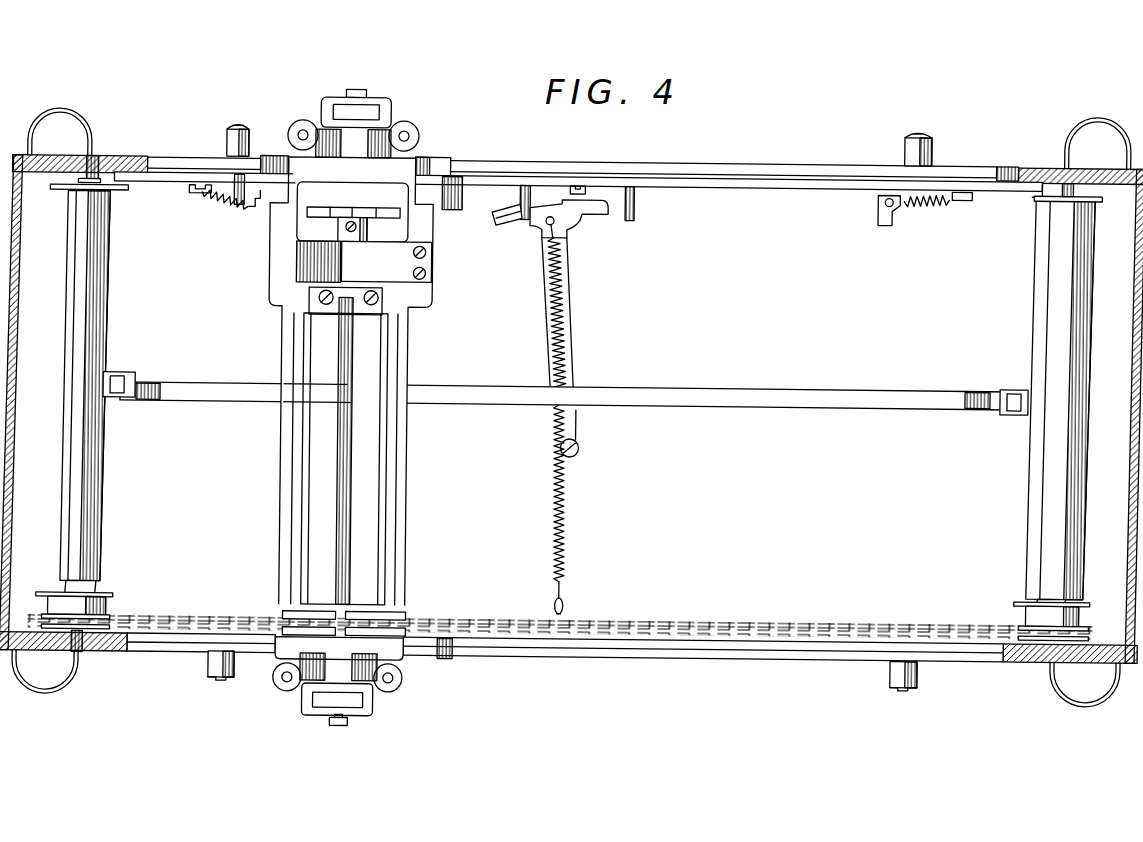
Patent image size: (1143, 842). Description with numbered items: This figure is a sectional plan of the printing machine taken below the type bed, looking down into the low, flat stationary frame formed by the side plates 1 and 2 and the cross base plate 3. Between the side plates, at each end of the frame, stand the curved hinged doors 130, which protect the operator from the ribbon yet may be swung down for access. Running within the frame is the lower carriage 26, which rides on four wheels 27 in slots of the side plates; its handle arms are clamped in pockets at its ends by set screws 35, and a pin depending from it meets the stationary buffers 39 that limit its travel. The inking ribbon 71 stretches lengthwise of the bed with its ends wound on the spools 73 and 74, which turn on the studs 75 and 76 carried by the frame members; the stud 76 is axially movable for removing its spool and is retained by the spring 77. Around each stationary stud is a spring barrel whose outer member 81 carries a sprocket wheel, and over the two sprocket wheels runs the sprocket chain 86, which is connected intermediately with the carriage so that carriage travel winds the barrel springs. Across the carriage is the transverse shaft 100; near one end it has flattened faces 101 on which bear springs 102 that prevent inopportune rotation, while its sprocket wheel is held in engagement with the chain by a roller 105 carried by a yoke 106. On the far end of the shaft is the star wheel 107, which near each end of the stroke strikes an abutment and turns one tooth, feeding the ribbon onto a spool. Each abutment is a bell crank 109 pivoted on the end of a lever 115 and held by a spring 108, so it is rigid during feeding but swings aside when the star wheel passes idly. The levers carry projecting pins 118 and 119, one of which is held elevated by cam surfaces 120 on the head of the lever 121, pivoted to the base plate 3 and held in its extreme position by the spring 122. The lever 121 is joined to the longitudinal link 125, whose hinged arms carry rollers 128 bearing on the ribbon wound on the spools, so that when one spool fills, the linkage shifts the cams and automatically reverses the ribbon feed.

The side plate 1 is at (32, 628).
The side plate 2 is at (40, 182).
The cross base plate 3 is at (769, 492).
The lower carriage 26 is at (400, 502).
The wheels 27 is at (446, 166).
The set screws 35 is at (360, 96).
The stationary buffers 39 is at (224, 150).
The inking ribbon 71 is at (1038, 312).
The spool 73 is at (108, 228).
The spool 74 is at (1052, 196).
The stationary stud 75 is at (82, 656).
The stud 76 is at (93, 161).
The spring 77 is at (75, 186).
The outer member of spring barrel 81 is at (104, 609).
The sprocket chain 86 is at (856, 621).
The transverse shaft 100 is at (340, 470).
The flattened faces 101 is at (362, 232).
The springs 102 is at (363, 262).
The roller 105 is at (300, 614).
The yoke 106 is at (385, 614).
The star wheel 107 is at (370, 216).
The spring 108 is at (932, 206).
The bell crank 109 is at (892, 222).
The pivoted levers 115 is at (1003, 164).
The projecting pin 118 is at (633, 205).
The projecting pin 119 is at (518, 203).
The cam surfaces 120 is at (509, 226).
The lever 121 is at (568, 310).
The spring 122 is at (566, 493).
The link 125 is at (565, 397).
The rollers 128 is at (122, 402).
The curved hinged doors 130 is at (17, 508).